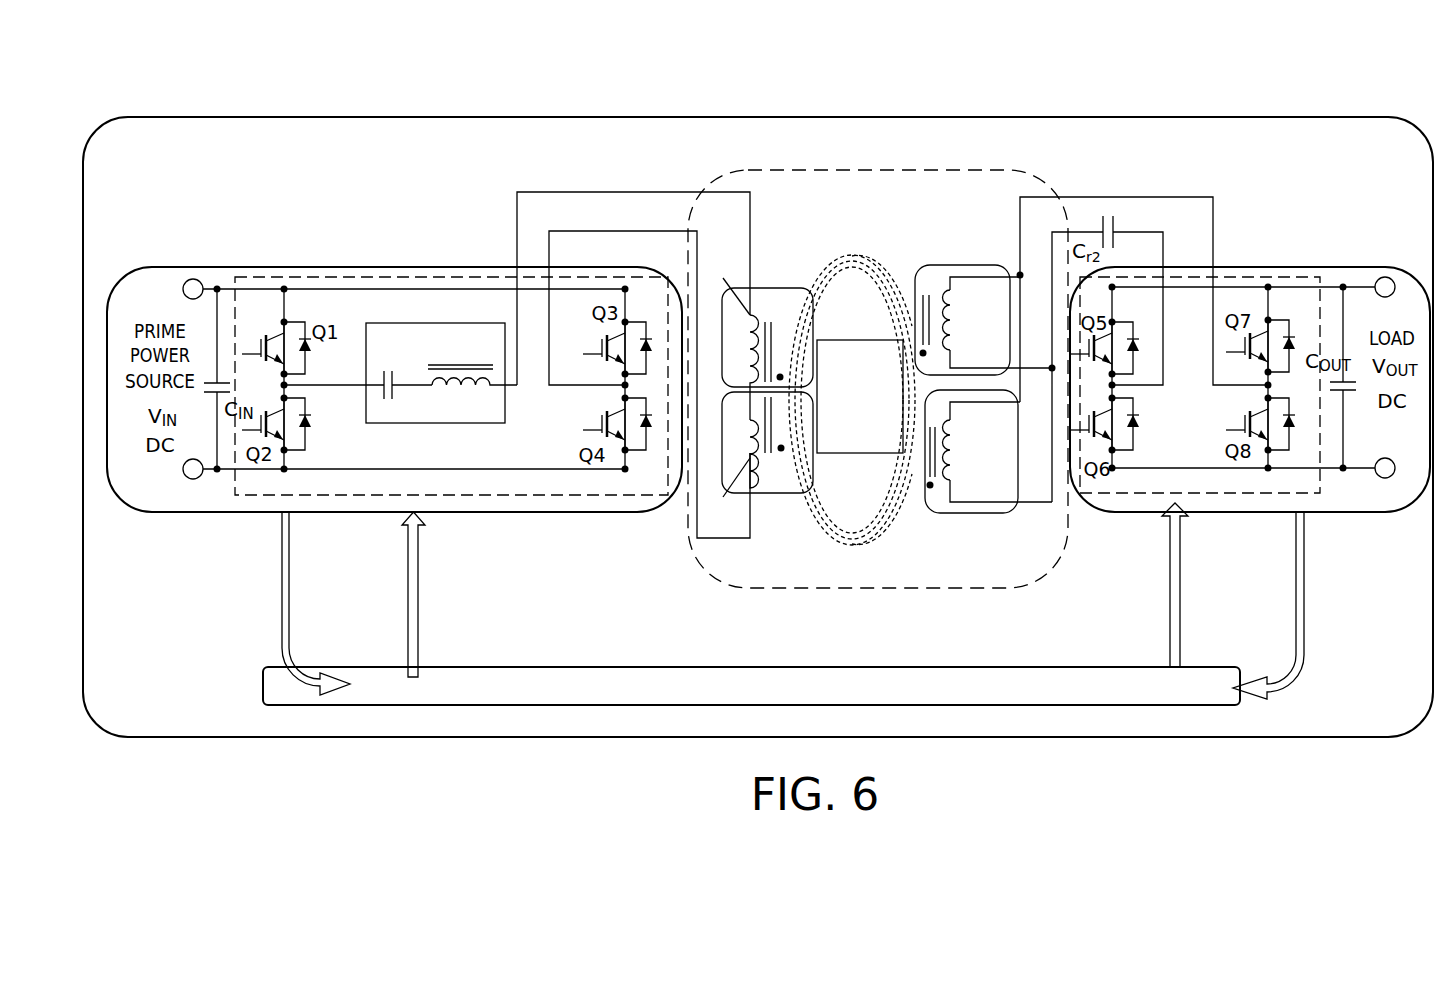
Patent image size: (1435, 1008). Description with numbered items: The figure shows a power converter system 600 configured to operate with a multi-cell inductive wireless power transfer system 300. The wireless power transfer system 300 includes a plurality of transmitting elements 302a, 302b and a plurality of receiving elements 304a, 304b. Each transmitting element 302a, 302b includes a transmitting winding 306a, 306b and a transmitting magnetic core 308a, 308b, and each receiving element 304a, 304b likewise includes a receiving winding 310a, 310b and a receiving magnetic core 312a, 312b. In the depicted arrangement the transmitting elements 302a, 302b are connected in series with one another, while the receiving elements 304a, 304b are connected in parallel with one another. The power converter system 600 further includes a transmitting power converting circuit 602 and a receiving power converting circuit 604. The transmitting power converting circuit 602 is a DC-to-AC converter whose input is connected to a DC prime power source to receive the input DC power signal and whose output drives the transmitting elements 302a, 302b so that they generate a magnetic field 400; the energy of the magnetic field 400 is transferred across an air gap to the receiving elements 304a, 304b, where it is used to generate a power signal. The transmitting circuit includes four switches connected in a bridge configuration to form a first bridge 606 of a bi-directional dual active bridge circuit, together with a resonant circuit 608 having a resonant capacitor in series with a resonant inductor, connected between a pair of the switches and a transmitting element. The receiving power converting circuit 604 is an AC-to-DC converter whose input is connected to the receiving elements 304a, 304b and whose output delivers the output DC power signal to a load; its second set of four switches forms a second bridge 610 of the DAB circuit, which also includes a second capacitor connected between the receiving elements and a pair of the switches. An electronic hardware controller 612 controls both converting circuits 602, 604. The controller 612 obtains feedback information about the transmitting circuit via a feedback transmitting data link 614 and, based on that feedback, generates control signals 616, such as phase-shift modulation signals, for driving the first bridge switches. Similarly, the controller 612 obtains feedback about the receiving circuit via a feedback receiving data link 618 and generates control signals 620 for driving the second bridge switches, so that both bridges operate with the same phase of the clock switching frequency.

The power converter system 600 is at (155, 92).
The multi-cell inductive wireless power transfer system 300 is at (868, 148).
The transmitting element 302a is at (777, 274).
The transmitting element 302b is at (793, 514).
The receiving element 304a is at (985, 251).
The receiving element 304b is at (995, 530).
The transmitting winding 306a is at (633, 288).
The transmitting winding 306b is at (649, 384).
The transmitting magnetic core 308a is at (778, 340).
The transmitting magnetic core 308b is at (791, 453).
The receiving winding 310a is at (943, 290).
The receiving winding 310b is at (950, 474).
The receiving magnetic core 312a is at (896, 280).
The receiving magnetic core 312b is at (898, 502).
The magnetic field 400 is at (846, 256).
The transmitting power converting circuit 602 is at (152, 276).
The receiving power converting circuit 604 is at (1337, 252).
The first bridge 606 is at (318, 258).
The resonant circuit 608 is at (507, 401).
The second bridge 610 is at (1245, 255).
The electronic hardware controller 612 is at (618, 665).
The feedback transmitting data link 614 is at (290, 598).
The control signals 616 is at (419, 598).
The feedback receiving data link 618 is at (1293, 598).
The control signals 620 is at (1168, 605).